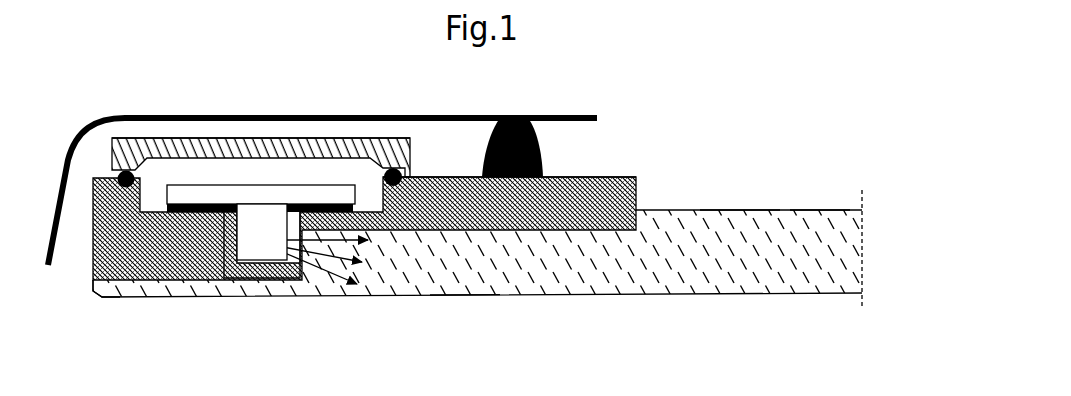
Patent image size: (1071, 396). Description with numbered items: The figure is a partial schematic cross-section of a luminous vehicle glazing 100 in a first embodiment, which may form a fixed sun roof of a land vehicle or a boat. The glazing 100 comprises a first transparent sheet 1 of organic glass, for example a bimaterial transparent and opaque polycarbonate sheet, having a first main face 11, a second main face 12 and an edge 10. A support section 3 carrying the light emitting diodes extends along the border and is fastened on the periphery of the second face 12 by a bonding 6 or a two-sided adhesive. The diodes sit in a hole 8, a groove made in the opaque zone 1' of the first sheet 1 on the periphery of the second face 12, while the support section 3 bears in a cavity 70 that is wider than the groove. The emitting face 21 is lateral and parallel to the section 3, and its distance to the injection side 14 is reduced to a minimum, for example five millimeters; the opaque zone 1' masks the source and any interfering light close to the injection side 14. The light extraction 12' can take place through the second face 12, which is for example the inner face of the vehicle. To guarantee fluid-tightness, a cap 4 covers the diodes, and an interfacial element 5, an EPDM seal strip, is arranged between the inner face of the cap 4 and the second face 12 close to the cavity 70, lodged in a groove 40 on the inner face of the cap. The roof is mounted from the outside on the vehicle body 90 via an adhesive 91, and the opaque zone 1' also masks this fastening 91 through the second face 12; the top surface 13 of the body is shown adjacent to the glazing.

The first transparent sheet 1 is at (477, 229).
The opaque zone 1' is at (372, 235).
The support section 3 is at (250, 197).
The cap 4 is at (155, 160).
The interfacial element 5 is at (393, 160).
The bonding 6 is at (330, 200).
The hole 8 is at (293, 218).
The edge 10 is at (93, 287).
The first main face 11 is at (466, 295).
The second main face 12 is at (740, 180).
The light extraction 12' is at (820, 180).
The housing top surface 13 is at (593, 177).
The injection side 14 is at (283, 255).
The emitting face 21 is at (283, 240).
The groove 40 is at (118, 131).
The cavity 70 is at (204, 175).
The vehicle body 90 is at (184, 123).
The adhesive 91 is at (537, 150).
The luminous vehicle glazing 100 is at (682, 92).